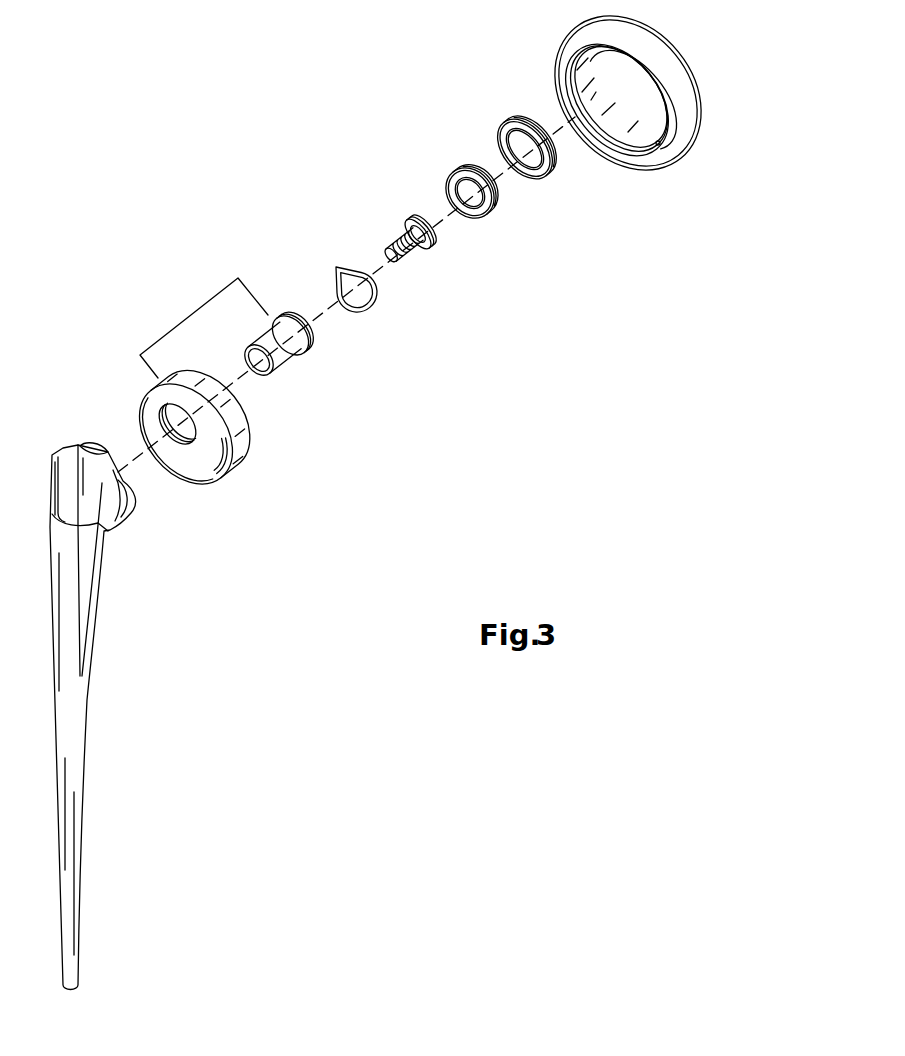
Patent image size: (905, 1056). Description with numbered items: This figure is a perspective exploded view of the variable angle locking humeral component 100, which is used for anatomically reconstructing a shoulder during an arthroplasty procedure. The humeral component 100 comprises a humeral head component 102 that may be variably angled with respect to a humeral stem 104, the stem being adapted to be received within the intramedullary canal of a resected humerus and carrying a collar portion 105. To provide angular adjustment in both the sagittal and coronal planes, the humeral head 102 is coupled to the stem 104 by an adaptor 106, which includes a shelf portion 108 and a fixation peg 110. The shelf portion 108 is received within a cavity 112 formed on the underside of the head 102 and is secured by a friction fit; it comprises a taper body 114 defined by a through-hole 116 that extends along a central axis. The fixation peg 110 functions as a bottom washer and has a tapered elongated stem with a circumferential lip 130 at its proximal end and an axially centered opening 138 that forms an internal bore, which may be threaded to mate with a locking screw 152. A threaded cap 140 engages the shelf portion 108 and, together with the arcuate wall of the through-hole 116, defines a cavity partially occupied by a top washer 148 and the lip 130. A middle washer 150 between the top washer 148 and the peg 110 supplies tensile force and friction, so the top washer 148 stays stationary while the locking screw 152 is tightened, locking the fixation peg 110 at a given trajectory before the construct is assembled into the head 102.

The humeral component 100 is at (214, 91).
The humeral head component 102 is at (680, 133).
The humeral stem 104 is at (78, 728).
The collar portion 105 is at (133, 500).
The adaptor 106 is at (187, 318).
The shelf portion 108 is at (244, 452).
The fixation peg 110 is at (296, 362).
The cavity 112 is at (619, 123).
The taper body 114 is at (148, 387).
The through-hole 116 is at (160, 420).
The circumferential lip 130 is at (293, 311).
The axially centered opening 138 is at (261, 373).
The threaded cap 140 is at (512, 122).
The top washer 148 is at (494, 206).
The middle washer 150 is at (378, 291).
The locking screw 152 is at (398, 232).